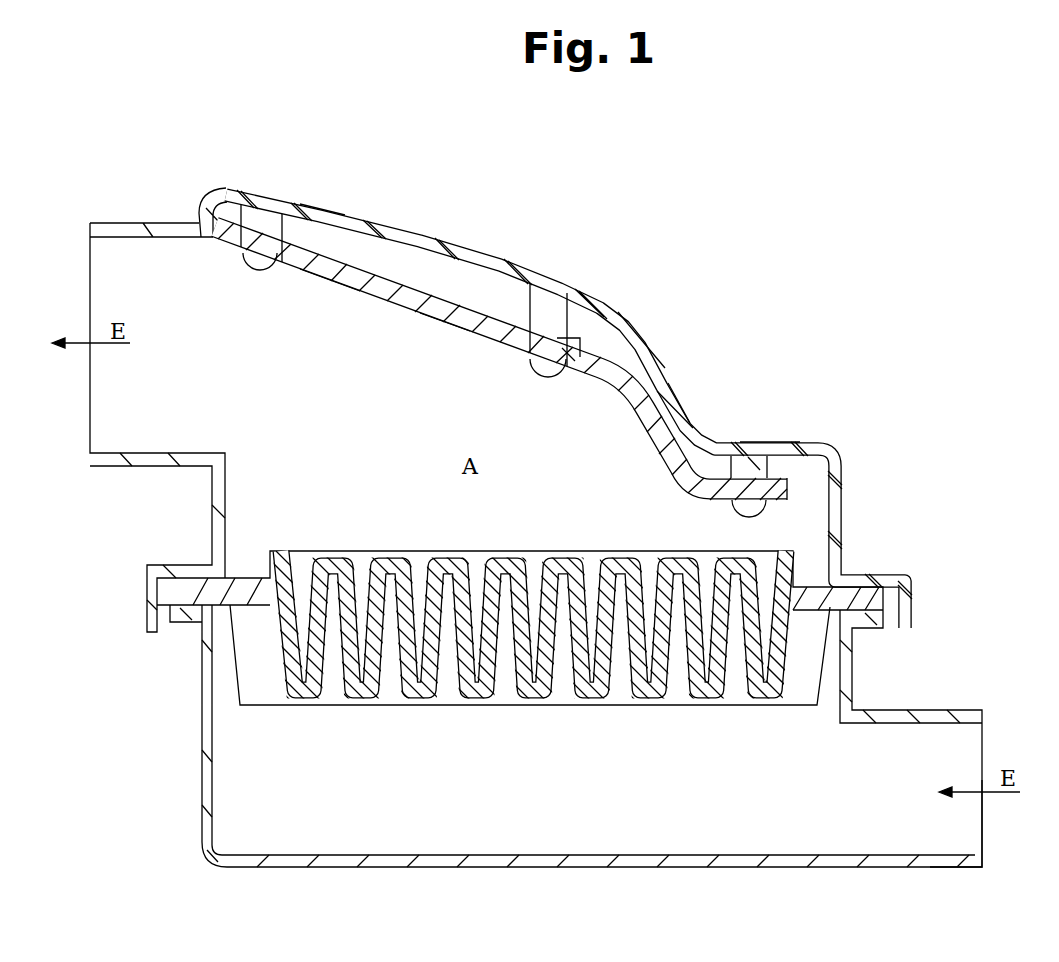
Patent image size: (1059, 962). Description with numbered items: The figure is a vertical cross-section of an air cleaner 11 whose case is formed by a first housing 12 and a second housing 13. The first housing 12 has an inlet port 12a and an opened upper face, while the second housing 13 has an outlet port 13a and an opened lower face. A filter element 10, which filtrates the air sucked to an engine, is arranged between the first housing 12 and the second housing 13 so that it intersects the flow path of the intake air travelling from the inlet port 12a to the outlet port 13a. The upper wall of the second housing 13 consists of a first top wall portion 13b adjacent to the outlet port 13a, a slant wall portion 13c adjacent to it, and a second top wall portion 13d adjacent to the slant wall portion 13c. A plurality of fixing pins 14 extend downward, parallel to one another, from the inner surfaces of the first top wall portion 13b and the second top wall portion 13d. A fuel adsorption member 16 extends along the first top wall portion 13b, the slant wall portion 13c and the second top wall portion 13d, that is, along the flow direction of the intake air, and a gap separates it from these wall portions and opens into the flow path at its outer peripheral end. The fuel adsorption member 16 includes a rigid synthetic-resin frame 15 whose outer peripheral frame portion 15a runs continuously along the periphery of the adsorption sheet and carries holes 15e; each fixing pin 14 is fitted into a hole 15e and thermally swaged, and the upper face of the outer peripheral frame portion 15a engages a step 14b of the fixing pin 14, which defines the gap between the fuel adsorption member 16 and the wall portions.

The filter element 10 is at (588, 708).
The air cleaner 11 is at (645, 297).
The first housing 12 is at (578, 869).
The inlet port 12a is at (973, 853).
The second housing 13 is at (468, 394).
The outlet port 13a is at (95, 242).
The first top wall portion 13b is at (320, 213).
The slant wall portion 13c is at (674, 386).
The second top wall portion 13d is at (768, 441).
The fixing pin 14 is at (262, 270).
The step 14b is at (576, 352).
The frame 15 is at (389, 303).
The outer peripheral frame portion 15a is at (332, 282).
The hole 15e is at (243, 263).
The fuel adsorption member 16 is at (448, 324).